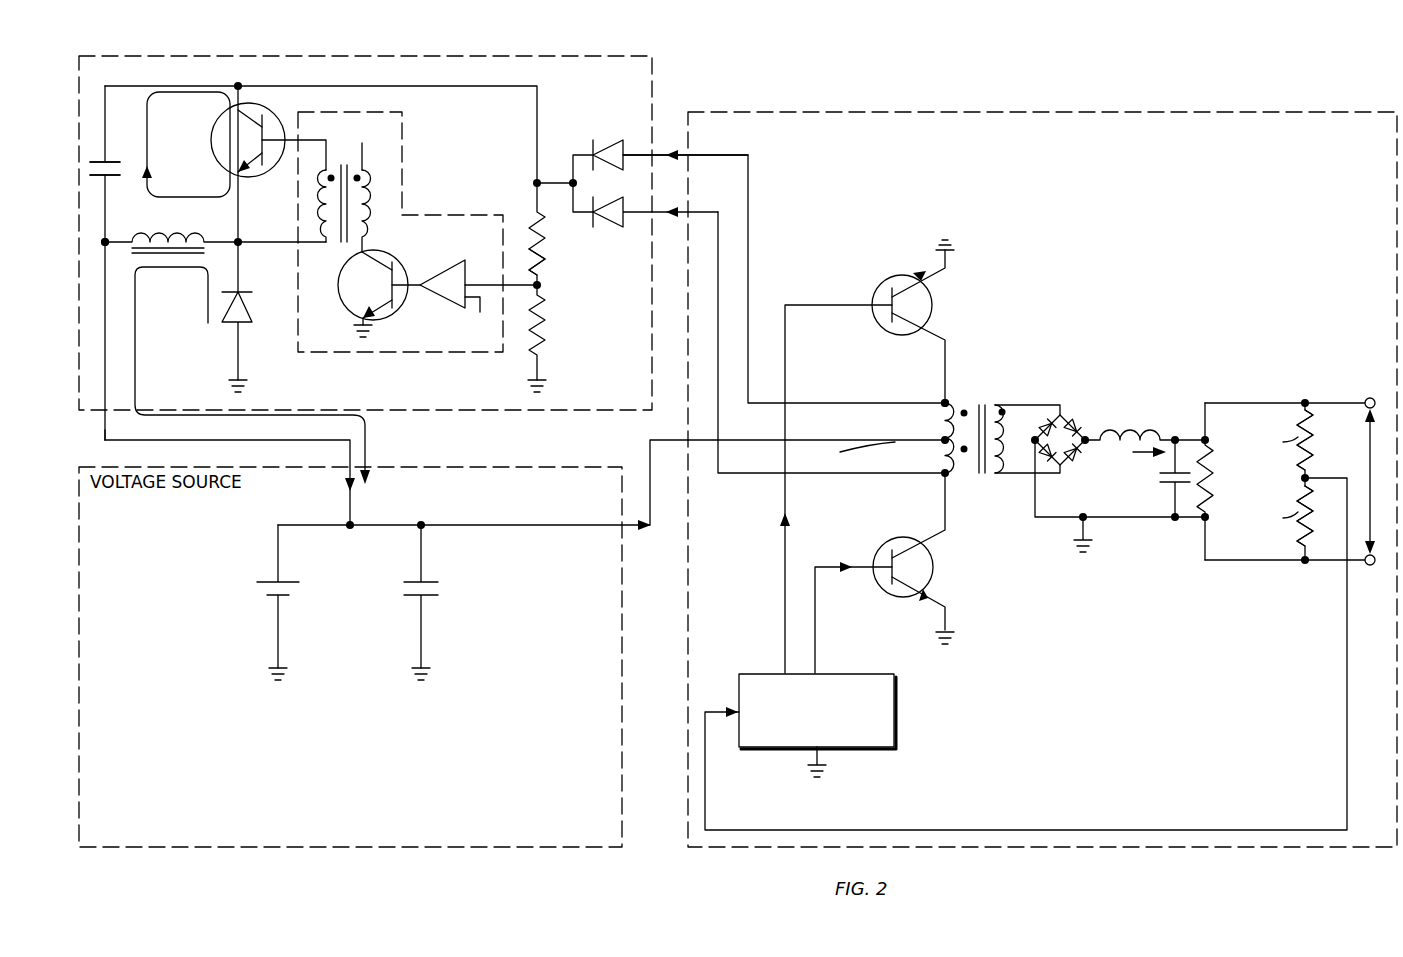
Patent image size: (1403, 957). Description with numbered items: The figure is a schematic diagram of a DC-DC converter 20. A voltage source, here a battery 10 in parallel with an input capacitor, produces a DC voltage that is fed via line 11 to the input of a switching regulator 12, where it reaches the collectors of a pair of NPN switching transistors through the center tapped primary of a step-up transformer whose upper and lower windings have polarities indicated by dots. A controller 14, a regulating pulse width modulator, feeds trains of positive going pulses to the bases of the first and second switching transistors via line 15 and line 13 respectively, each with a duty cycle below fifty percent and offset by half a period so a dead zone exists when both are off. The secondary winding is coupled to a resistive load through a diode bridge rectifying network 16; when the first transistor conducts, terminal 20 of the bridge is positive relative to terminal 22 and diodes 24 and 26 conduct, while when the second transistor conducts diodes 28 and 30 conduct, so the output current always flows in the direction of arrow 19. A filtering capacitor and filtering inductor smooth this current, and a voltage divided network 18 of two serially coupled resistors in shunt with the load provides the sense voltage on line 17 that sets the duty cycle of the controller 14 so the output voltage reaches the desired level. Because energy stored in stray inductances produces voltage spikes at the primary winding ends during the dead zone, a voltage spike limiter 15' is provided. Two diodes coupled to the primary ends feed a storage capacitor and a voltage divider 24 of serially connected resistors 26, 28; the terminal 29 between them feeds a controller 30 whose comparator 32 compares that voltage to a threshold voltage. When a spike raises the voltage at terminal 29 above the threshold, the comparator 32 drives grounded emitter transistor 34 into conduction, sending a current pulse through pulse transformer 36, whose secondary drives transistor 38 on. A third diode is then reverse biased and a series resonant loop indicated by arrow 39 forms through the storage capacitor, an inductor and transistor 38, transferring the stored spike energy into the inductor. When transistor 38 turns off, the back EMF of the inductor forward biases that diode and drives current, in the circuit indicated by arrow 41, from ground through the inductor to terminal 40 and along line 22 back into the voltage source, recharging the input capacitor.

The battery 10 is at (253, 588).
The line 11 is at (490, 525).
The switching regulator 12 is at (920, 111).
The line 13 is at (833, 304).
The controller 14 is at (896, 705).
The line 15 is at (853, 617).
The voltage spike limiter 15' is at (365, 233).
The diode bridge rectifying network 16 is at (1080, 422).
The line 17 is at (845, 830).
The voltage divided network 18 is at (1326, 457).
The arrow 19 is at (1172, 437).
The DC-DC converter 20 is at (268, 36).
The line 22 is at (252, 440).
The voltage divider 24 is at (528, 226).
The resistor 26 is at (545, 248).
The resistor 28 is at (546, 332).
The terminal 29 is at (543, 285).
The controller 30 is at (404, 156).
The comparator 32 is at (448, 270).
The transistor 34 is at (350, 306).
The pulse transformer 36 is at (342, 160).
The transistor 38 is at (240, 118).
The series resonant circuit loop 39 is at (171, 197).
The terminal 40 is at (111, 243).
The electrical circuit 41 is at (136, 352).